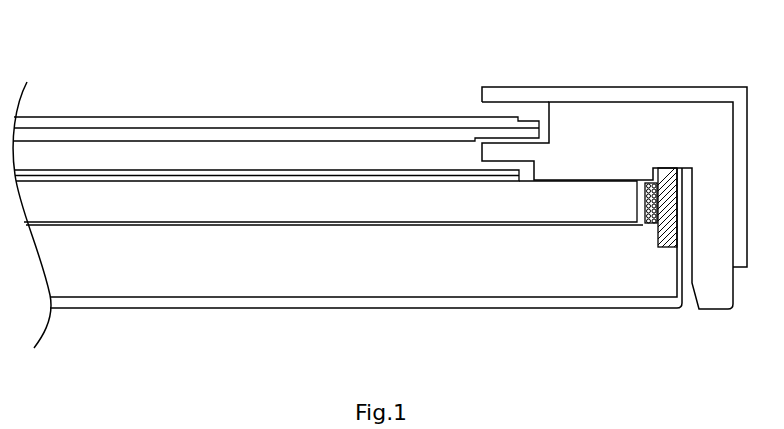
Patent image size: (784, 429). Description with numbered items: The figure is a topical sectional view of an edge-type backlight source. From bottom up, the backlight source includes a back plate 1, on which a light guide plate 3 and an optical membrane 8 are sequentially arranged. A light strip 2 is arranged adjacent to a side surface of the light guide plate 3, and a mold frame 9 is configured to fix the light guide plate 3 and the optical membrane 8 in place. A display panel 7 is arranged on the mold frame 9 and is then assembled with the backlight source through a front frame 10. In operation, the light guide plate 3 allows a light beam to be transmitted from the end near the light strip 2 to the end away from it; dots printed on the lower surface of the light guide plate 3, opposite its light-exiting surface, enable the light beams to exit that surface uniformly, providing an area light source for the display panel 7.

The back plate 1 is at (547, 302).
The light strip 2 is at (643, 223).
The light guide plate 3 is at (397, 204).
The display panel 7 is at (412, 128).
The optical membrane 8 is at (262, 172).
The mold frame 9 is at (617, 117).
The front frame 10 is at (522, 98).